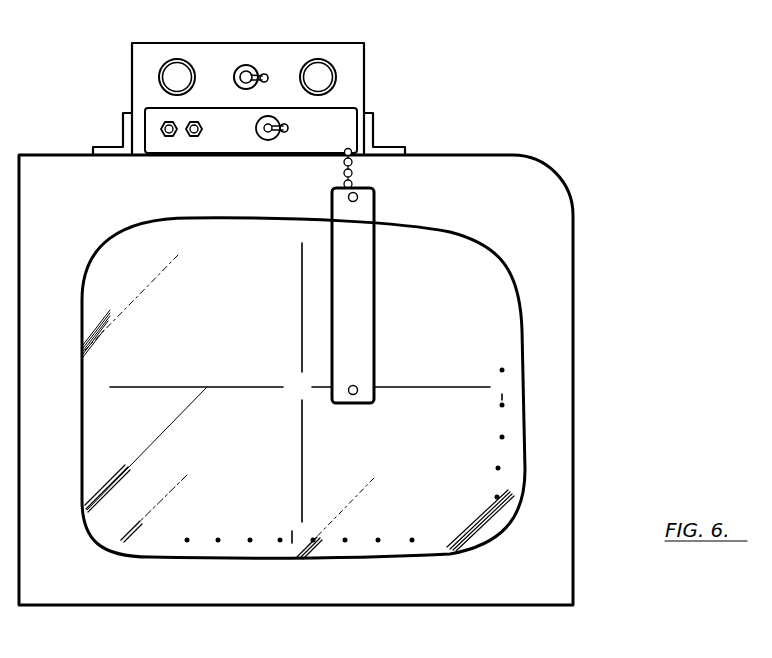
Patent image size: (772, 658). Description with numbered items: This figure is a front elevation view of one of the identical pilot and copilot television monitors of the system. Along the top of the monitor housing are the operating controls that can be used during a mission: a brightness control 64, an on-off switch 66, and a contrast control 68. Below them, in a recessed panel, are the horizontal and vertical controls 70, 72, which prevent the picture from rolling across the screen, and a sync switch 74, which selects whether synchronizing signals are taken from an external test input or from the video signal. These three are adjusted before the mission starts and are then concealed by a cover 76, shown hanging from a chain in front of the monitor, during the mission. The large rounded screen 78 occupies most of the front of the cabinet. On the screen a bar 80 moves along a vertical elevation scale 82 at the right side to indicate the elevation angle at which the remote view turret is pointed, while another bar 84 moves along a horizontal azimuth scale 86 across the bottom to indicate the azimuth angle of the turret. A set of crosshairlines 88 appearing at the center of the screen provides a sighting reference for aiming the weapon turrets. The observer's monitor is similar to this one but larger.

The brightness control 64 is at (170, 62).
The on-off switch 66 is at (262, 75).
The contrast control 68 is at (330, 77).
The horizontal control 70 is at (168, 137).
The vertical control 72 is at (192, 137).
The sync switch 74 is at (270, 133).
The cover 76 is at (365, 268).
The screen 78 is at (478, 290).
The bar 80 is at (505, 395).
The elevation scale 82 is at (508, 462).
The bar 84 is at (290, 543).
The azimuth scale 86 is at (330, 545).
The crosshairlines 88 is at (302, 453).